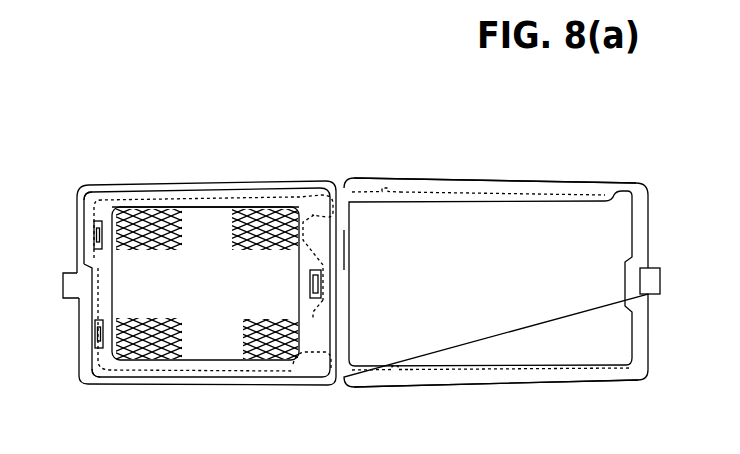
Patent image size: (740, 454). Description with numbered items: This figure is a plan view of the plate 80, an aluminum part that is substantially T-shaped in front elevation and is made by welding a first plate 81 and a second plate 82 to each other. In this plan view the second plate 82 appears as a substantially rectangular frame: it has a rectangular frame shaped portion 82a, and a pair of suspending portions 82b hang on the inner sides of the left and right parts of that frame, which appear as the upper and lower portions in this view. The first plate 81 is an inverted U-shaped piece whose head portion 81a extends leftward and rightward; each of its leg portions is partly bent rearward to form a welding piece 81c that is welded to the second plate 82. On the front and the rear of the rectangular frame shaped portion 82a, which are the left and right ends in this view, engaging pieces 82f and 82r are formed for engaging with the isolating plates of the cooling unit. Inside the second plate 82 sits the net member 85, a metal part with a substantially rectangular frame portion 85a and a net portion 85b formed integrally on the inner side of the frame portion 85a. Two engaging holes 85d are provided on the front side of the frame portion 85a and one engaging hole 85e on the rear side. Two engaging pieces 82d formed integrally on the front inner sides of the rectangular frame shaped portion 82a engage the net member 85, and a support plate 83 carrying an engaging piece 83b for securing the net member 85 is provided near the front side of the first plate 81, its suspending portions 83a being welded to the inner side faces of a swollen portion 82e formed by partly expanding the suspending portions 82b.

The plate 80 is at (563, 389).
The first plate 81 is at (349, 319).
The head portion 81a is at (347, 248).
The welding piece 81c is at (378, 188).
The second plate 82 is at (446, 388).
The rectangular frame shaped portion 82a is at (535, 188).
The suspending portion 82b is at (198, 208).
The engaging piece 82d is at (94, 232).
The swollen portion 82e is at (305, 190).
The engaging piece 82f is at (63, 288).
The engaging piece 82r is at (653, 289).
The support plate 83 is at (312, 235).
The suspending portion 83a is at (348, 222).
The engaging piece 83b is at (311, 283).
The net member 85 is at (192, 194).
The frame portion 85a is at (161, 192).
The net portion 85b is at (142, 212).
The engaging hole 85d is at (80, 188).
The engaging hole 85e is at (319, 322).